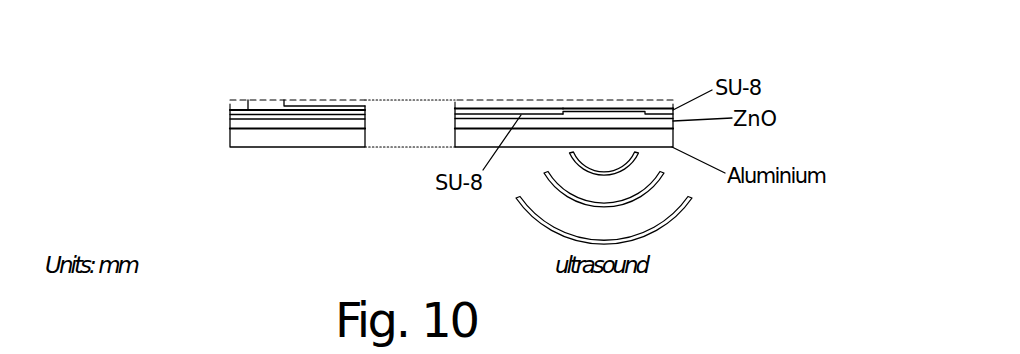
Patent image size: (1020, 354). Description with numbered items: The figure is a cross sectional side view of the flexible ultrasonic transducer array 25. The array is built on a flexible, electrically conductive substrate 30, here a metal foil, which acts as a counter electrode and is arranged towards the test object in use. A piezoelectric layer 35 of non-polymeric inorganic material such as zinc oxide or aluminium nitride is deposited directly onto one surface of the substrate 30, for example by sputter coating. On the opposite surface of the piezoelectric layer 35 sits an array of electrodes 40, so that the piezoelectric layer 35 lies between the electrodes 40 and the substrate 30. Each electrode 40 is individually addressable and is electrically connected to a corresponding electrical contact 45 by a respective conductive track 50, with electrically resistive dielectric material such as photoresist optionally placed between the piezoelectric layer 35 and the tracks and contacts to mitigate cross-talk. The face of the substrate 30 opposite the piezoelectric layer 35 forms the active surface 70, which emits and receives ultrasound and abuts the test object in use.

The ultrasonic transducer array 25 is at (130, 58).
The substrate 30 is at (663, 137).
The piezoelectric layer 35 is at (238, 123).
The electrode 40 is at (608, 112).
The electrical contact 45 is at (265, 100).
The conductive track 50 is at (480, 110).
The active surface 70 is at (273, 148).